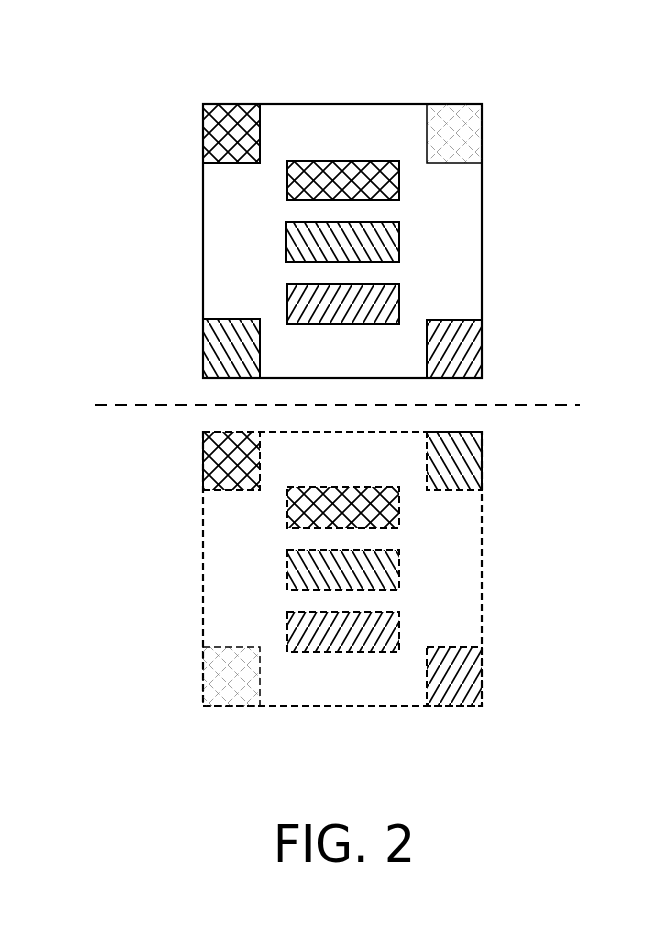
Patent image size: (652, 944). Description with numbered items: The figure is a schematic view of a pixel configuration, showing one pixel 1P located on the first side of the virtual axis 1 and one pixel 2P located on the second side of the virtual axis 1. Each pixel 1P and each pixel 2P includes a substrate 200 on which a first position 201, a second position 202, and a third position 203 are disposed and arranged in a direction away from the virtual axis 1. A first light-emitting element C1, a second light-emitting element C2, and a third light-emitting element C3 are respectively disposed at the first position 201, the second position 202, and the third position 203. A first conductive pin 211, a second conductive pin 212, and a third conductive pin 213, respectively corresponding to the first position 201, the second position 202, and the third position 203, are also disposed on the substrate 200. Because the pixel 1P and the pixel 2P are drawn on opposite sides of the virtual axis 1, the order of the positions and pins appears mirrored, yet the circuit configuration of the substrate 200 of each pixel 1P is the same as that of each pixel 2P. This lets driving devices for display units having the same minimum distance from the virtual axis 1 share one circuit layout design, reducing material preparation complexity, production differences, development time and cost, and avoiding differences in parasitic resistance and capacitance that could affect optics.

The substrate 200 is at (272, 403).
The first position 201 is at (400, 403).
The second position 202 is at (400, 406).
The third position 203 is at (398, 406).
The first conductive pin 211 is at (482, 346).
The second conductive pin 212 is at (203, 345).
The third conductive pin 213 is at (222, 103).
The first light-emitting element C1 is at (297, 293).
The second light-emitting element C2 is at (297, 241).
The third light-emitting element C3 is at (297, 182).
The pixel 1P is at (155, 223).
The pixel 2P is at (155, 548).
The virtual axis 1 is at (583, 406).